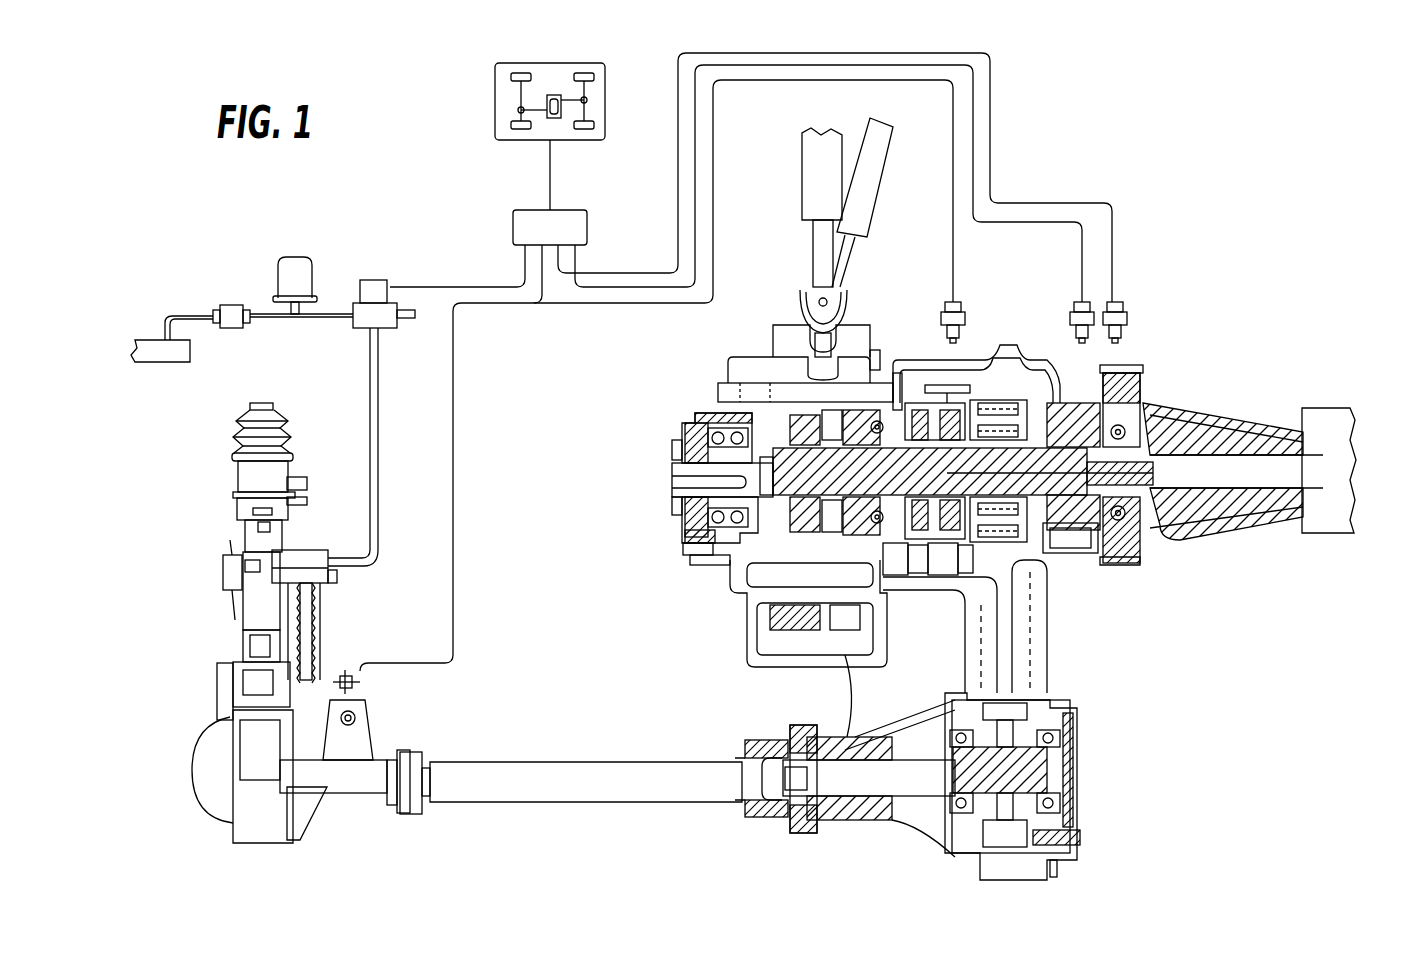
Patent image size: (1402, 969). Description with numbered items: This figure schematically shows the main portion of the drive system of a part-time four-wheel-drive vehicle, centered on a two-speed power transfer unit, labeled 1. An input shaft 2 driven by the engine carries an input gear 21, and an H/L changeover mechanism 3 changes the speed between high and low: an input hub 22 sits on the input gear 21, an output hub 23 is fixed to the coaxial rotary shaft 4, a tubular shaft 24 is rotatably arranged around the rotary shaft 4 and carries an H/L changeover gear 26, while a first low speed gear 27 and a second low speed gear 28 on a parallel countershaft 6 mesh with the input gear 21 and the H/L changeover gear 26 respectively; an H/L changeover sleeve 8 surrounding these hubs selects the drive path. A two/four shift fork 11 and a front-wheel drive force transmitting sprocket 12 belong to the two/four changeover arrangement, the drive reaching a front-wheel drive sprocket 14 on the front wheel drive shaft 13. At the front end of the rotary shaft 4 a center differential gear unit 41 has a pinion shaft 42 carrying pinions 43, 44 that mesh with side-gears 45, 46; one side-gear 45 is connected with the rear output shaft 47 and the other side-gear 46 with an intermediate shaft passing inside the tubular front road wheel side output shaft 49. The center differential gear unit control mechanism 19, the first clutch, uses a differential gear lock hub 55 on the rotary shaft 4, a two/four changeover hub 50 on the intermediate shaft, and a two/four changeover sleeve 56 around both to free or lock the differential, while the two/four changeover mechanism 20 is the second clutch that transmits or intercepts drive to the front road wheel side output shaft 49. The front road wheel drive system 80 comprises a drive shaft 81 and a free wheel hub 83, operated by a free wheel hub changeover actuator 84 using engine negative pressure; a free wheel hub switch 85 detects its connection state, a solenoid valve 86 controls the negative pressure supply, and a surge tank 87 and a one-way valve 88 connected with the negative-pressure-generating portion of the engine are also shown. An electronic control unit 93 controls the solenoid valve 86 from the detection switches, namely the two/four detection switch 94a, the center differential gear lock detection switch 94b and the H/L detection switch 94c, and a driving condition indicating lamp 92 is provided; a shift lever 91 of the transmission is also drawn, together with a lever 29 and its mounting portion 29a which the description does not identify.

The transmission unit 1 is at (695, 560).
The input shaft 2 is at (680, 517).
The H/L changeover mechanism 3 is at (678, 547).
The rotary shaft 4 is at (878, 489).
The countershaft 6 is at (730, 595).
The H/L changeover sleeve 8 is at (740, 410).
The 2/4 shift fork 11 is at (975, 398).
The front-wheel drive force transmitting sprocket 12 is at (1012, 402).
The front wheel drive shaft 13 is at (860, 782).
The front-wheel drive sprocket 14 is at (1010, 712).
The center differential gear unit control mechanism 19 is at (903, 580).
The 2/4 changeover mechanism 20 is at (948, 597).
The input gear 21 is at (678, 490).
The input hub 22 is at (680, 463).
The output hub 23 is at (690, 437).
The tubular shaft 24 is at (873, 350).
The H/L changeover gear 26 is at (830, 430).
The first low speed gear 27 is at (770, 630).
The second low speed gear 28 is at (840, 630).
The shift lever 29 is at (808, 182).
The shift lever housing 29a is at (780, 340).
The center differential gear unit 41 is at (1105, 415).
The pinion shaft 42 is at (1062, 553).
The pinion 43 is at (1065, 410).
The pinion 44 is at (1095, 562).
The side-gear 45 is at (1128, 555).
The side-gear 46 is at (1048, 580).
The rear output shaft 47 is at (1240, 480).
The front road wheel side output shaft 49 is at (952, 590).
The 2/4 changeover hub 50 is at (935, 588).
The differential gear lock hub 55 is at (915, 590).
The 2/4 changeover sleeve 56 is at (935, 405).
The front road wheel drive system 80 is at (190, 750).
The drive shaft 81 is at (243, 643).
The free wheel hub 83 is at (240, 707).
The free wheel hub changeover actuator 84 is at (313, 553).
The free wheel hub switch 85 is at (342, 676).
The solenoid valve 86 is at (390, 328).
The surge tank 87 is at (313, 272).
The one-way valve 88 is at (229, 305).
The shift lever 91 is at (885, 180).
The driving condition indicating lamp 92 is at (605, 112).
The electronic control unit 93 is at (587, 229).
The 2/4 detection switch 94a is at (1078, 302).
The center differential gear lock detection switch 94b is at (958, 302).
The H/L detection switch 94c is at (1122, 302).